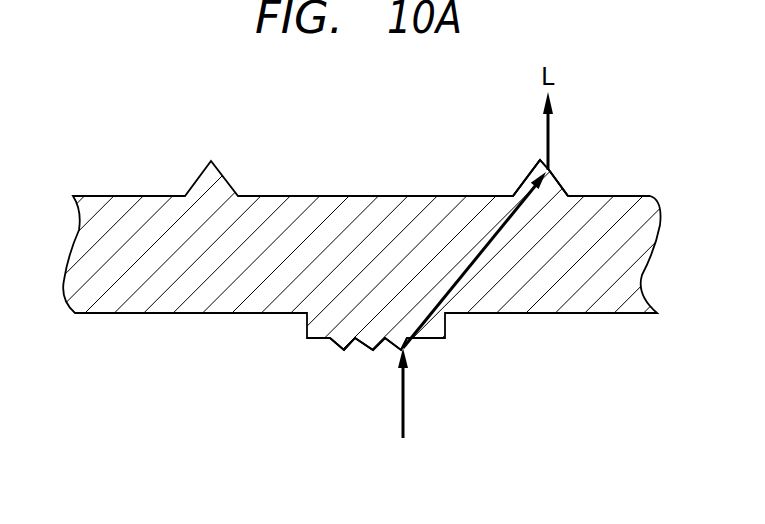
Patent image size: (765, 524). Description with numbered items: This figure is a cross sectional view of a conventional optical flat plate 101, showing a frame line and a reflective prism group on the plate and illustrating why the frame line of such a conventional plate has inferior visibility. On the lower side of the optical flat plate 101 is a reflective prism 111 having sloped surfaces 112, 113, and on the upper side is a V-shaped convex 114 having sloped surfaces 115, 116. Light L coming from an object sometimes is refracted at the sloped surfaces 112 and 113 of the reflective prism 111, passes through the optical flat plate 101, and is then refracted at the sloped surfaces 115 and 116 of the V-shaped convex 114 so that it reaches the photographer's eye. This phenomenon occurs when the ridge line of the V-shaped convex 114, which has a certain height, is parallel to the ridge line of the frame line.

The optical flat plate 101 is at (141, 202).
The reflective prism 111 is at (392, 350).
The sloped surface 112 is at (392, 345).
The sloped surface 113 is at (407, 345).
The V-shaped convex 114 is at (537, 173).
The sloped surface 115 is at (525, 180).
The sloped surface 116 is at (557, 178).